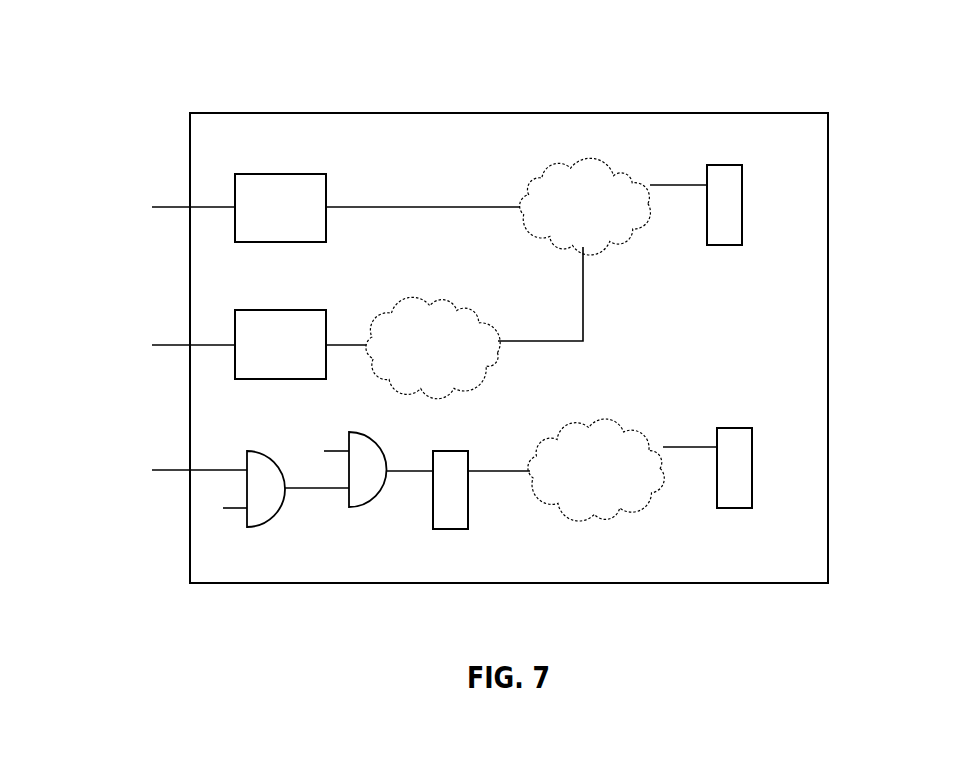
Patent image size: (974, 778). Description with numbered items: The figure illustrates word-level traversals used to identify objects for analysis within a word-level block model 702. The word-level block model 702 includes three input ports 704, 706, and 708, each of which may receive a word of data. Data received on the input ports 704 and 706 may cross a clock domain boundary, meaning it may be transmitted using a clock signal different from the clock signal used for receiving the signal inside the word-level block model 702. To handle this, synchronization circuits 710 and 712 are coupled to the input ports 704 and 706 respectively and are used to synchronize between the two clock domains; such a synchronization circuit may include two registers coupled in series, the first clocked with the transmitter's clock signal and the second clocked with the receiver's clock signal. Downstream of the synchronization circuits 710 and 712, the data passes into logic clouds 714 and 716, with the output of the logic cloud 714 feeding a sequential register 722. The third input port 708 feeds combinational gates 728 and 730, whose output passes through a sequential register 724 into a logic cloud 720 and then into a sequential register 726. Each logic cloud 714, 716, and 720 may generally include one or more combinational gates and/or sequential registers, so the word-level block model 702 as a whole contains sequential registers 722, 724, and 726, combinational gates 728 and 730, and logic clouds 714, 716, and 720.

The word-level block model 702 is at (790, 112).
The input port 704 is at (148, 208).
The input port 706 is at (151, 346).
The input port 708 is at (157, 471).
The synchronization circuit 710 is at (280, 208).
The synchronization circuit 712 is at (280, 344).
The logic cloud 714 is at (585, 206).
The logic cloud 716 is at (433, 347).
The logic cloud 720 is at (596, 470).
The sequential register 722 is at (742, 245).
The sequential register 724 is at (468, 529).
The sequential register 726 is at (752, 508).
The combinational gate 728 is at (261, 522).
The combinational gate 730 is at (365, 503).